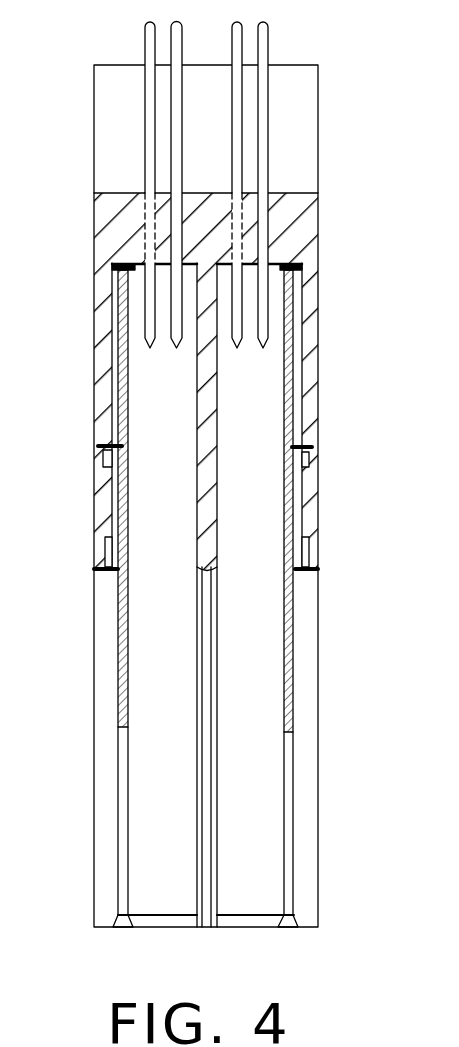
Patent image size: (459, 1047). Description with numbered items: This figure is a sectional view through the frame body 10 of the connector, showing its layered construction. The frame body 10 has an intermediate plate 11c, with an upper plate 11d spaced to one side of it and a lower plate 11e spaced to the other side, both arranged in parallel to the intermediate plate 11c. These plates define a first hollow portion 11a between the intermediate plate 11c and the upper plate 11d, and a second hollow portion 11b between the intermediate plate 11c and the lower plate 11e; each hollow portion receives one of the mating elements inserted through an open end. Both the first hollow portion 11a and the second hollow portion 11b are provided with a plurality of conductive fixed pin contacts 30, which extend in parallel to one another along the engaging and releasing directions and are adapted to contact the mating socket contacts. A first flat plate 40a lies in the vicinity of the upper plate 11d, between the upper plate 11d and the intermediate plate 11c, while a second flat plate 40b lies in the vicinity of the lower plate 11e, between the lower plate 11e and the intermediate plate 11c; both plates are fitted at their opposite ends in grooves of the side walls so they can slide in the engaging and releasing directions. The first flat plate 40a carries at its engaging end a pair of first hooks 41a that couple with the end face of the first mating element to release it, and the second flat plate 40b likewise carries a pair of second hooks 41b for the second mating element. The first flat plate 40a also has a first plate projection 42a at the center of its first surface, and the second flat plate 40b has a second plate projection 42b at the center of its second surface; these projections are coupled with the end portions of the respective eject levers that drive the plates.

The frame body 10 is at (96, 343).
The first hollow portion 11a is at (148, 768).
The second hollow portion 11b is at (262, 742).
The intermediate plate 11c is at (217, 402).
The upper plate 11d is at (100, 398).
The lower plate 11e is at (318, 344).
The fixed pin contacts 30 is at (268, 33).
The first flat plate 40a is at (118, 617).
The second flat plate 40b is at (283, 613).
The first hooks 41a is at (112, 268).
The second hooks 41b is at (300, 250).
The first plate projection 42a is at (107, 445).
The second plate projection 42b is at (300, 447).